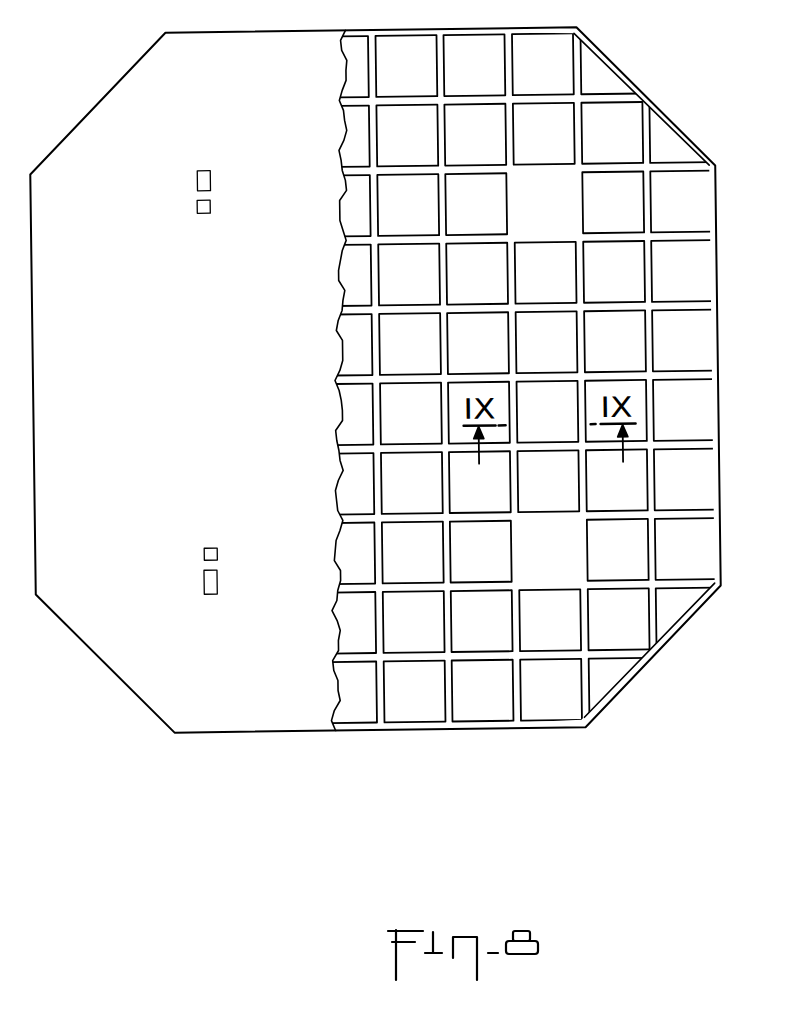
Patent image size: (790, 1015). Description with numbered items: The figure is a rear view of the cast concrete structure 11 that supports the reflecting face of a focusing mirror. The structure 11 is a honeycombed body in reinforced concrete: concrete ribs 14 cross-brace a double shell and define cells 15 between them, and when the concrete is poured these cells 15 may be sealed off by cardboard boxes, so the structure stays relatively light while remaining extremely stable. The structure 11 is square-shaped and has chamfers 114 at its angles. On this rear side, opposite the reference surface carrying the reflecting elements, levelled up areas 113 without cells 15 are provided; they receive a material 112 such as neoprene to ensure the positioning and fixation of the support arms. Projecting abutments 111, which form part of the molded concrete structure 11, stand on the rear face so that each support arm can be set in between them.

The structure 11 is at (113, 637).
The ribs 14 is at (533, 660).
The cells 15 is at (418, 643).
The abutments 111 is at (213, 178).
The material 112 is at (212, 205).
The levelled up areas 113 is at (550, 219).
The chamfers 114 is at (654, 104).